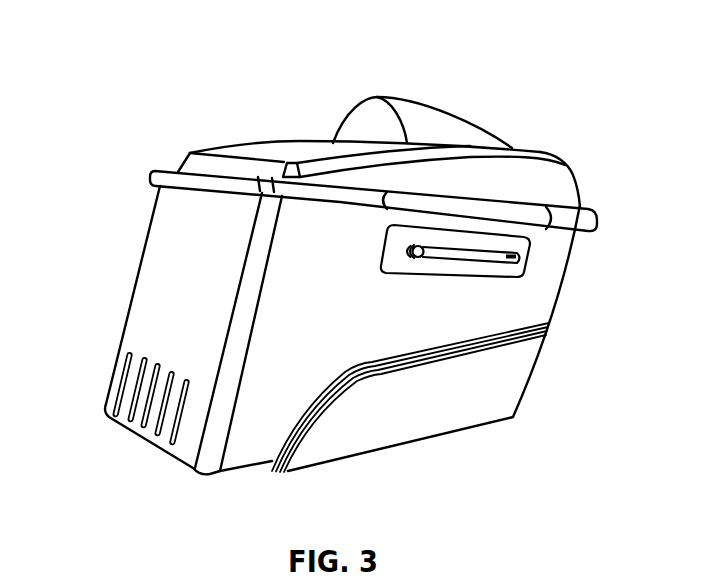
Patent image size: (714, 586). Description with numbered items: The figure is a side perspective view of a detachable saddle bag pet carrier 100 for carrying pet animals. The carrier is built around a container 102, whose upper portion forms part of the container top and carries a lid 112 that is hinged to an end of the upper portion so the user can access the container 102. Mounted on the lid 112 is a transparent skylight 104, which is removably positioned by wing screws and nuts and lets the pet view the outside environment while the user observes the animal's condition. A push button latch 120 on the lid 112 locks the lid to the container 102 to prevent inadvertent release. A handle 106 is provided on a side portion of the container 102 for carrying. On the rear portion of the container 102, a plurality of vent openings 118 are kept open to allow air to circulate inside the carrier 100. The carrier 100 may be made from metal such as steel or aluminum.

The detachable saddle bag pet carrier 100 is at (347, 247).
The container 102 is at (517, 312).
The transparent skylight 104 is at (378, 97).
The handle 106 is at (523, 190).
The lid 112 is at (555, 190).
The vent openings 118 is at (117, 391).
The push button latch 120 is at (513, 257).